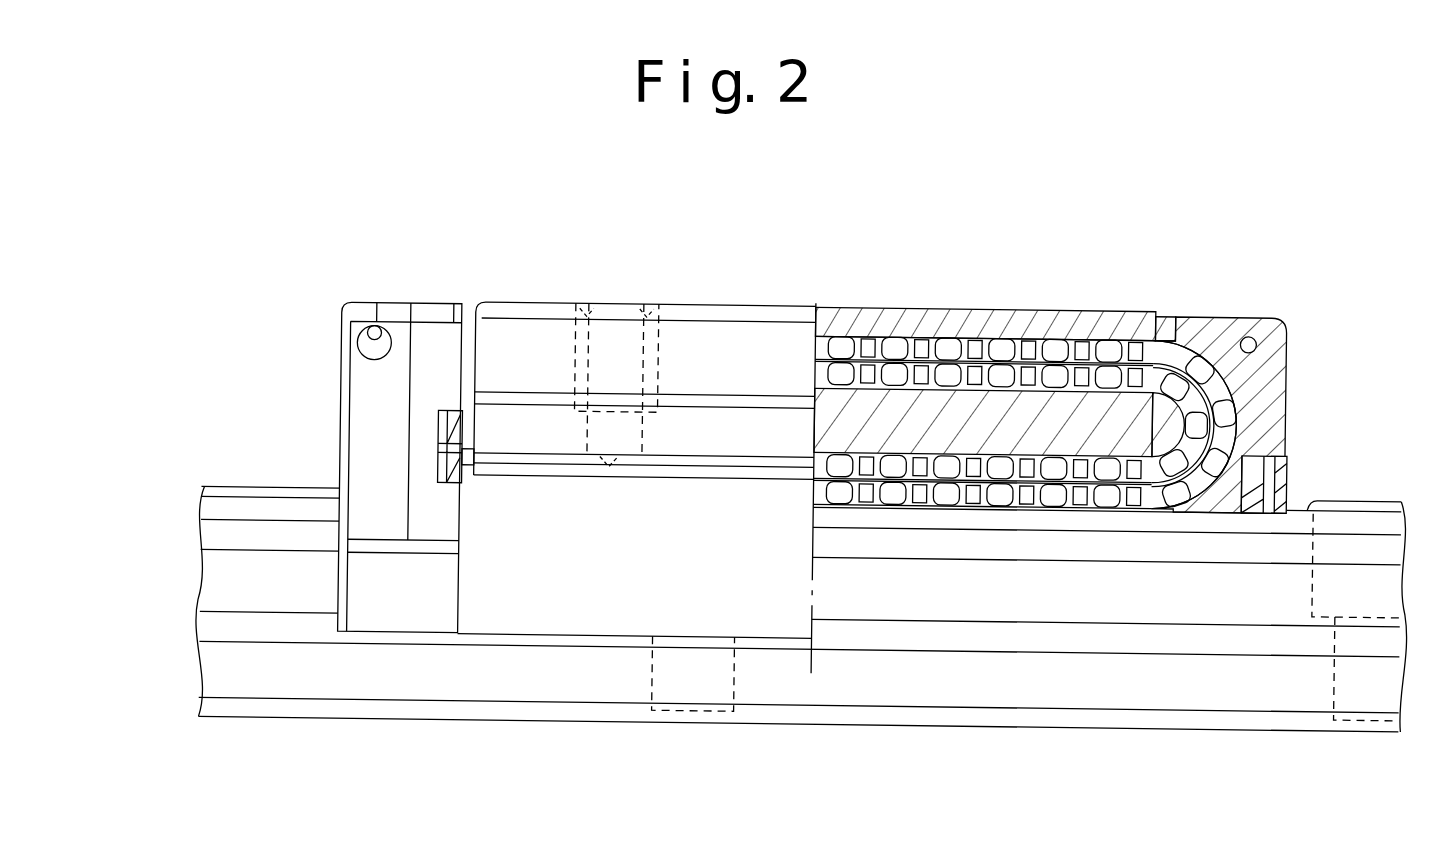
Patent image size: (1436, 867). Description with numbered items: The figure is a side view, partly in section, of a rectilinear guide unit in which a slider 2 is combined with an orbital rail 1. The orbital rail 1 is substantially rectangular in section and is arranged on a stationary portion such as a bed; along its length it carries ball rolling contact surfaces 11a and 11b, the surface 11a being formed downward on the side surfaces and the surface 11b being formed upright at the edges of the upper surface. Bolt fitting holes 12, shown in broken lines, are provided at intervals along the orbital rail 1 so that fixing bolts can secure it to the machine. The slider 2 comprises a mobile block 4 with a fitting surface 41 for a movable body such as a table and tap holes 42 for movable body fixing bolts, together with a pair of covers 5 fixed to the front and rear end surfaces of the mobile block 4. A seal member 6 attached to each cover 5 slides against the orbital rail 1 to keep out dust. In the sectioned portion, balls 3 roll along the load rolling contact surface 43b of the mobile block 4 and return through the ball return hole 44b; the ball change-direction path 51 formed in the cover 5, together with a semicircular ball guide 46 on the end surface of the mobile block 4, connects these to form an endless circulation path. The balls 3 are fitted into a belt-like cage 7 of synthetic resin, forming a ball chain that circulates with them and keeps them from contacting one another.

The orbital rail 1 is at (200, 475).
The ball rolling contact surface 11a is at (282, 540).
The ball rolling contact surface 11b is at (268, 487).
The slider 2 is at (408, 290).
The balls 3 is at (952, 330).
The mobile block 4 is at (733, 300).
The fitting surface 41 is at (510, 300).
The tap hole 42 is at (620, 300).
The load rolling contact surface 43b is at (1115, 325).
The ball return hole 44b is at (1062, 330).
The semicircular ball guide 46 is at (1168, 410).
The cover 5 is at (357, 375).
The ball change-direction path 51 is at (1274, 337).
The seal member 6 is at (1272, 455).
The belt-like cage 7 is at (857, 326).
The bolt fitting hole 12 is at (653, 643).